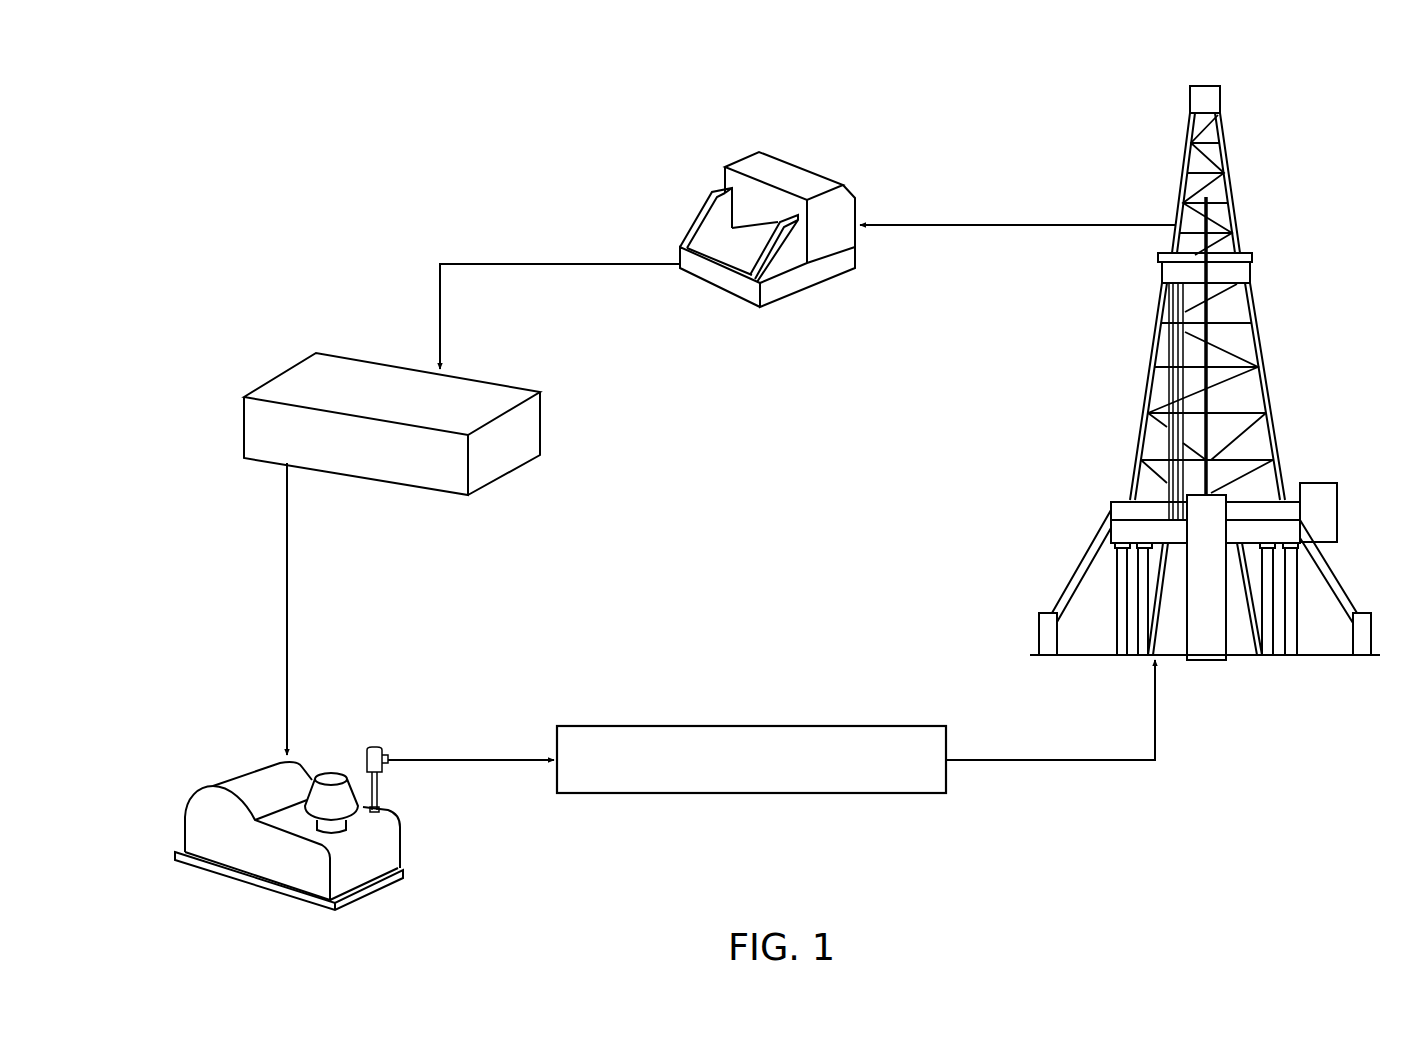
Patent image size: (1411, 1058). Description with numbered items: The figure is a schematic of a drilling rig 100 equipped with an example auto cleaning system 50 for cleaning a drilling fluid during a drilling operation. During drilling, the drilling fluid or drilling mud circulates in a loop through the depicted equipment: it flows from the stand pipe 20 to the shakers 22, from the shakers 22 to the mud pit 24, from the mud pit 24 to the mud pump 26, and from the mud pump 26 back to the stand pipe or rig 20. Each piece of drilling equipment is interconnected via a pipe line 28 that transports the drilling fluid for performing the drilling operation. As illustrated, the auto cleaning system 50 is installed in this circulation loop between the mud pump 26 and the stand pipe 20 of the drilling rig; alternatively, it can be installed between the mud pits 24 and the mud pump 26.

The drilling rig 100 is at (456, 100).
The stand pipe 20 is at (1222, 98).
The shakers 22 is at (792, 163).
The mud pit 24 is at (382, 383).
The mud pump 26 is at (300, 765).
The pipe line 28 is at (990, 223).
The auto cleaning system 50 is at (770, 771).